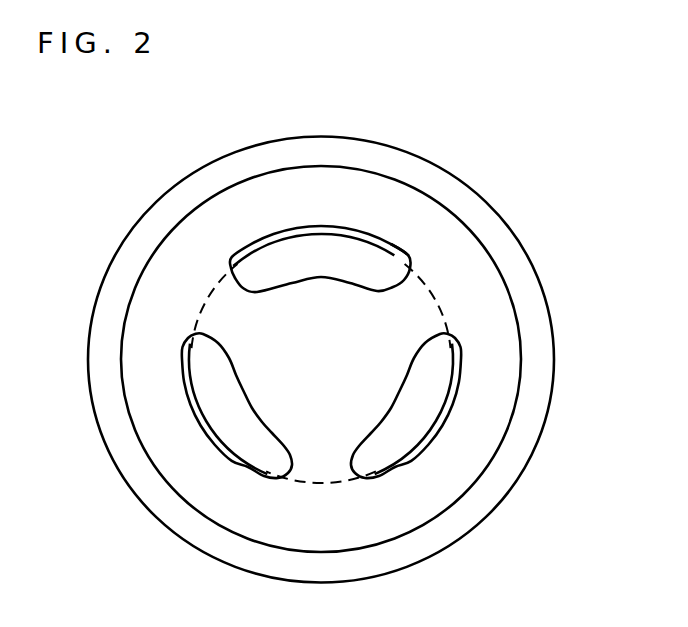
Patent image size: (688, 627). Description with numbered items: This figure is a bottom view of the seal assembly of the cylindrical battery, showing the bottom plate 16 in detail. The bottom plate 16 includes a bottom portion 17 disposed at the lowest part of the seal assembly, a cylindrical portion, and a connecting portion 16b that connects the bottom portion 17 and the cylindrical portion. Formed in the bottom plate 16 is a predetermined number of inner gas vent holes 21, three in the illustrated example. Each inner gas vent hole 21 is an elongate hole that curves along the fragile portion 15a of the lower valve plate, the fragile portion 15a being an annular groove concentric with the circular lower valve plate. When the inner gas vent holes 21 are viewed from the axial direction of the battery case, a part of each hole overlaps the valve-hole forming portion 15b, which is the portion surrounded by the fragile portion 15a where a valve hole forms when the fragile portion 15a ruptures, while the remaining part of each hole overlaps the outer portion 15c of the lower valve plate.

The inner gas vent hole 21 is at (333, 317).
The fragile portion 15a is at (390, 250).
The valve-hole forming portion 15b is at (380, 240).
The outer portion 15c is at (348, 271).
The bottom plate 16 is at (553, 326).
The connecting portion 16b is at (452, 528).
The bottom portion 17 is at (477, 422).